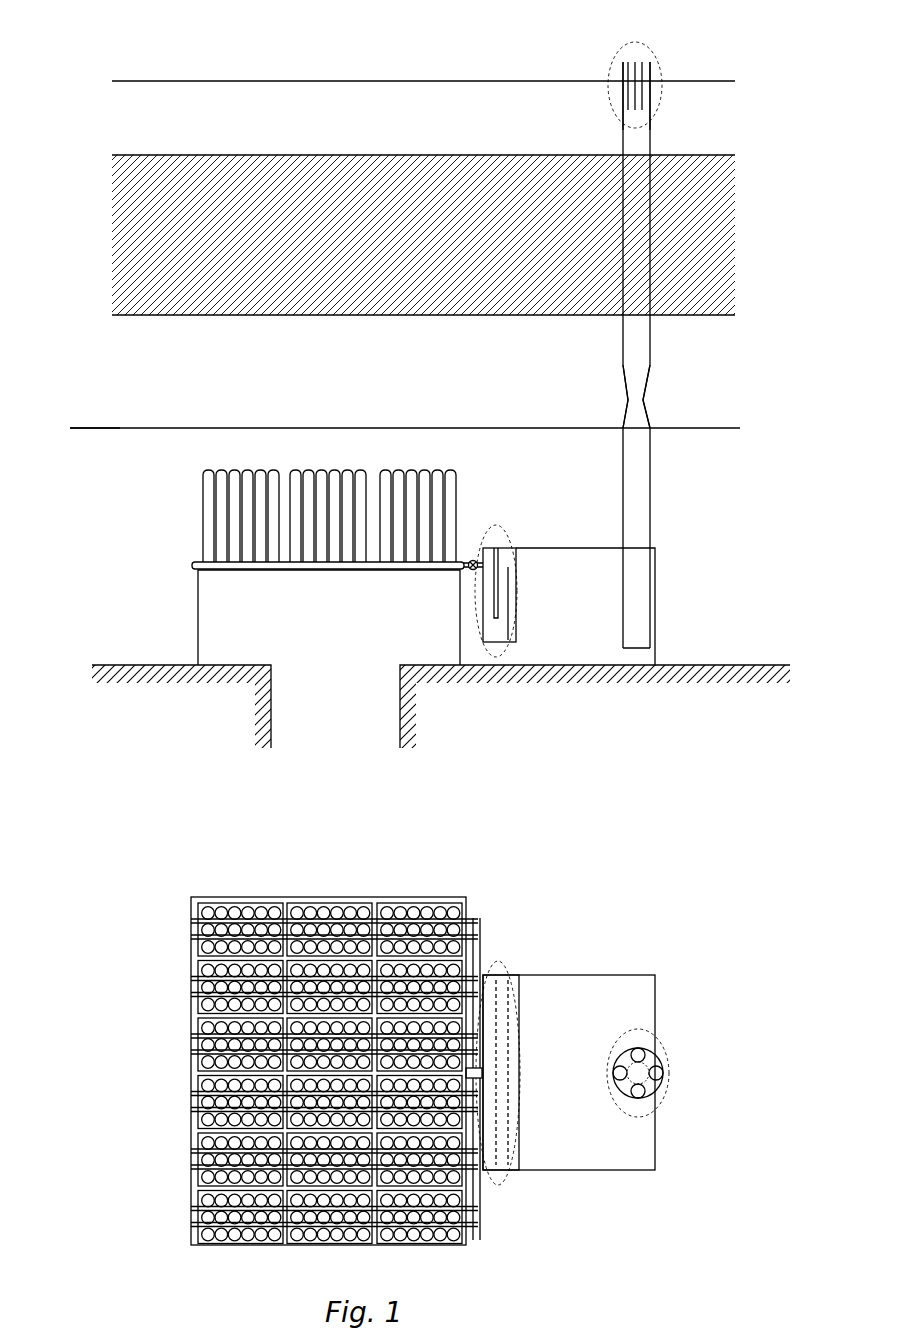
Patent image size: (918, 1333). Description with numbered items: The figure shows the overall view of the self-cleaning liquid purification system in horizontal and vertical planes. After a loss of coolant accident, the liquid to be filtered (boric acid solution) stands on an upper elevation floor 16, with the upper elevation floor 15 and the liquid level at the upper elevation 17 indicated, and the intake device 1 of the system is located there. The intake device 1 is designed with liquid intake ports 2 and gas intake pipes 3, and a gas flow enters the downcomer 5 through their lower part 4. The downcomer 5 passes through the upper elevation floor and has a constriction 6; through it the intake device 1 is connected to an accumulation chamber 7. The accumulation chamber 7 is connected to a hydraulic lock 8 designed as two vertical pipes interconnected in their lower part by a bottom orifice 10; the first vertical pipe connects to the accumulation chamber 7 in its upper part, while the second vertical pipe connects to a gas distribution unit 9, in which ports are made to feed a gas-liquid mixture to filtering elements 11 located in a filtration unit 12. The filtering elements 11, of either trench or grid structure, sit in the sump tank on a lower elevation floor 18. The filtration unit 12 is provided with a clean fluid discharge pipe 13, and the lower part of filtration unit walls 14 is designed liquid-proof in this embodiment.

The intake device 1 is at (658, 114).
The liquid intake ports 2 is at (636, 87).
The gas intake pipes 3 is at (645, 65).
The lower part of gas intake pipes 4 is at (645, 107).
The downcomer 5 is at (640, 238).
The downcomer constriction 6 is at (642, 400).
The accumulation chamber 7 is at (582, 563).
The hydraulic lock 8 is at (477, 645).
The gas distribution unit 9 is at (461, 563).
The bottom orifice of the hydraulic lock 10 is at (496, 626).
The filtering elements 11 is at (250, 518).
The filtration unit 12 is at (286, 570).
The clean fluid discharge pipe 13 is at (308, 693).
The lower part of filtration unit walls 14 is at (199, 648).
The upper elevation floor 15 is at (325, 81).
The upper elevation floor 16 is at (245, 155).
The liquid level at the upper elevation 17 is at (410, 428).
The lower elevation floor 18 is at (137, 665).